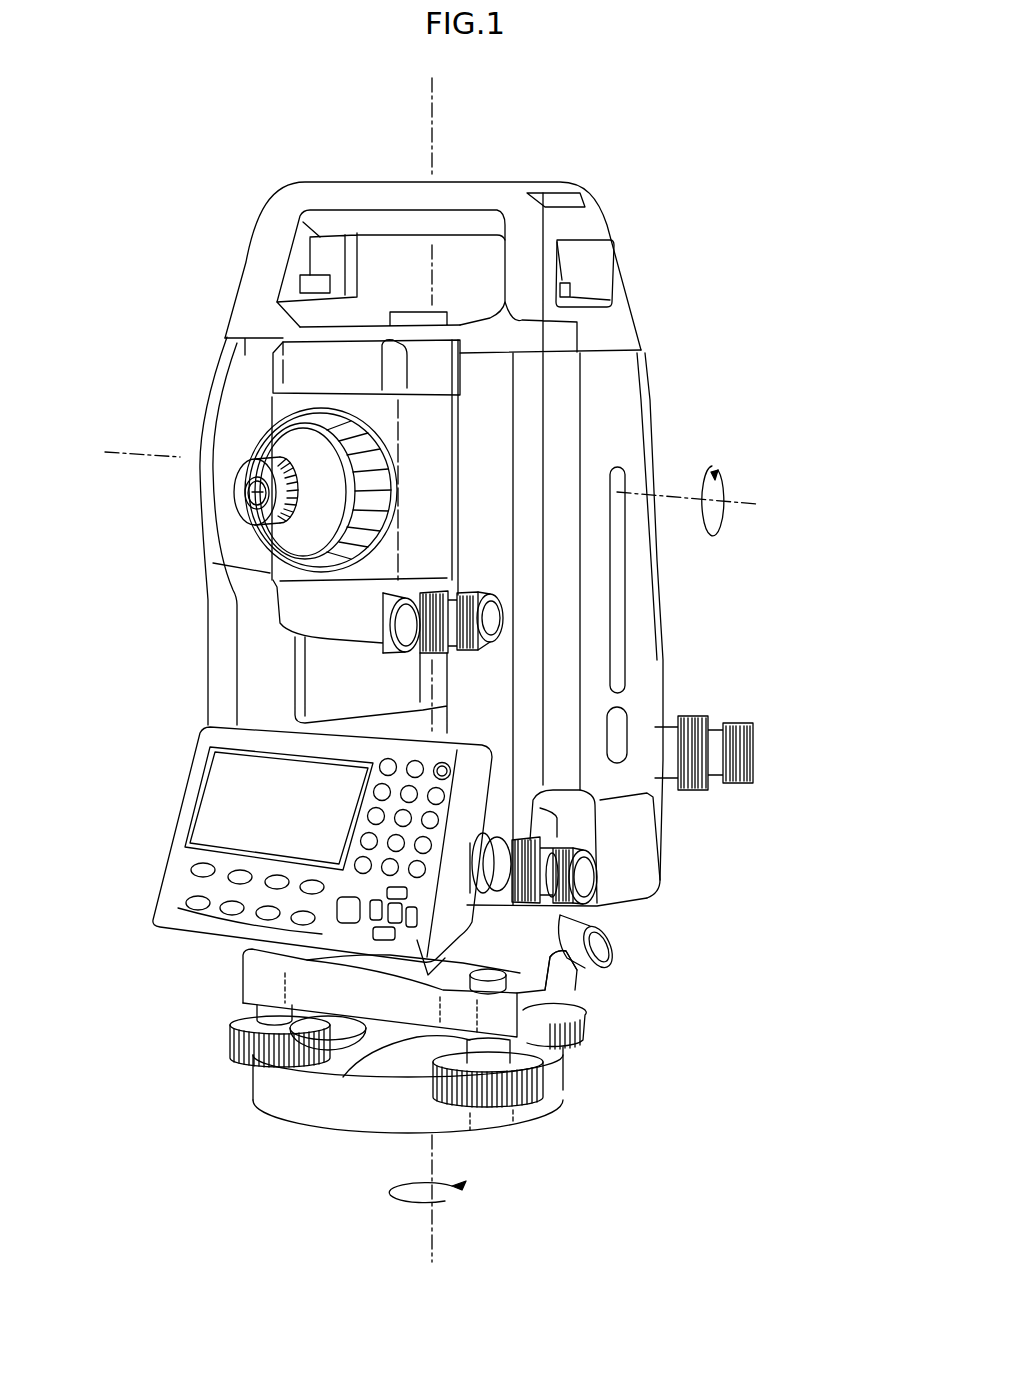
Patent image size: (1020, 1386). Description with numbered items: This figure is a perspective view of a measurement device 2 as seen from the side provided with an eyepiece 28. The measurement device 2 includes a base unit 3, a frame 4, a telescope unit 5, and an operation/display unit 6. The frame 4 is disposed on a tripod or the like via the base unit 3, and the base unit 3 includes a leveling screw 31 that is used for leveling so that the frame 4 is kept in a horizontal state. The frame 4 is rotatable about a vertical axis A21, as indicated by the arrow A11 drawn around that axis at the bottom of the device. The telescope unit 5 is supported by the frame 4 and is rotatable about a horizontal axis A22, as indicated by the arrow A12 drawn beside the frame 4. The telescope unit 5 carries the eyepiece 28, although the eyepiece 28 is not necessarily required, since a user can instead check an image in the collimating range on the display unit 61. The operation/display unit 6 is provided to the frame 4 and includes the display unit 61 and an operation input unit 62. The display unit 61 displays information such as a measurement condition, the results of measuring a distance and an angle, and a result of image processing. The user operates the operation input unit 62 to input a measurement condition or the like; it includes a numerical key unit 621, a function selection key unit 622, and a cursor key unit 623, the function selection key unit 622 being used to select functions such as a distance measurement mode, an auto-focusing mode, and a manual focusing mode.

The measurement device 2 is at (633, 160).
The base unit 3 is at (468, 1068).
The leveling screw 31 is at (543, 1082).
The frame 4 is at (612, 385).
The telescope unit 5 is at (303, 357).
The operation/display unit 6 is at (417, 829).
The display unit 61 is at (230, 805).
The operation input unit 62 is at (180, 866).
The numerical key unit 621 is at (450, 827).
The function selection key unit 622 is at (243, 950).
The cursor key unit 623 is at (572, 983).
The eyepiece 28 is at (262, 492).
The arrow A11 is at (447, 1203).
The arrow A12 is at (717, 478).
The vertical axis A21 is at (430, 1228).
The horizontal axis A22 is at (733, 505).